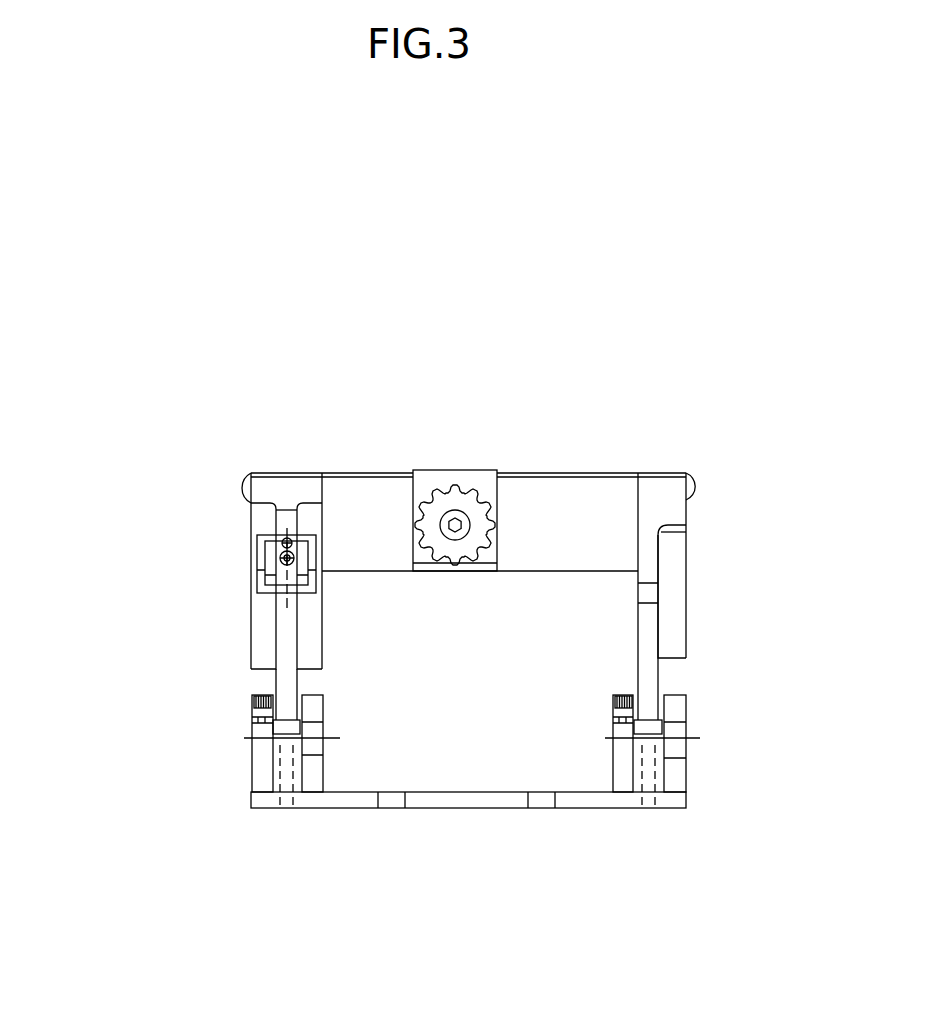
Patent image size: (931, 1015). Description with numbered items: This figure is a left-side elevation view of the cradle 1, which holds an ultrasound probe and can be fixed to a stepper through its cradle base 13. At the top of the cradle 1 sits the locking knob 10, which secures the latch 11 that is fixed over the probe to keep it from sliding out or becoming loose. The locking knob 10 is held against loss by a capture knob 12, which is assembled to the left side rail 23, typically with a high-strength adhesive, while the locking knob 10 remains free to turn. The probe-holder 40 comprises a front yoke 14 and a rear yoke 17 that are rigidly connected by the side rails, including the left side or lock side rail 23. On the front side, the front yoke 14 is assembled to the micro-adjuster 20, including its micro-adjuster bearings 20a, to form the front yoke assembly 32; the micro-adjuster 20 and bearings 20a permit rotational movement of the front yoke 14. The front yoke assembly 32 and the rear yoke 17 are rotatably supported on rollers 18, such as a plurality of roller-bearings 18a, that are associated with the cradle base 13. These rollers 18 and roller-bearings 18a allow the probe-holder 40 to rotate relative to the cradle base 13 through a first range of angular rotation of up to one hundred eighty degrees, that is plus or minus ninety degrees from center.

The cradle 1 is at (233, 417).
The probe-holder 40 is at (670, 462).
The locking knob 10 is at (468, 500).
The latch 11 is at (428, 477).
The capture knob 12 is at (462, 520).
The left side rail 23 is at (598, 573).
The rear yoke 17 is at (688, 582).
The front yoke 14 is at (250, 630).
The front yoke assembly 32 is at (230, 583).
The micro-adjuster 20 is at (258, 548).
The micro-adjuster bearings 20a is at (255, 559).
The rollers 18 is at (292, 737).
The roller-bearings 18a is at (282, 751).
The cradle base 13 is at (447, 800).